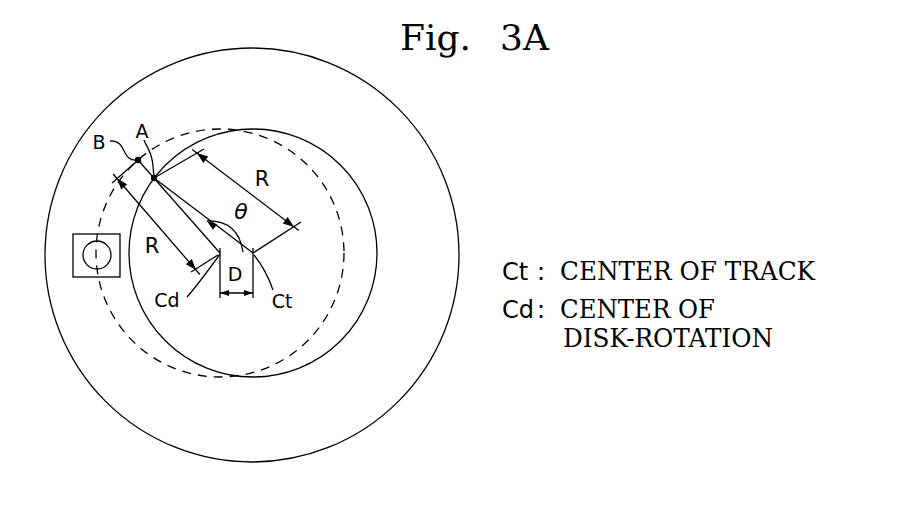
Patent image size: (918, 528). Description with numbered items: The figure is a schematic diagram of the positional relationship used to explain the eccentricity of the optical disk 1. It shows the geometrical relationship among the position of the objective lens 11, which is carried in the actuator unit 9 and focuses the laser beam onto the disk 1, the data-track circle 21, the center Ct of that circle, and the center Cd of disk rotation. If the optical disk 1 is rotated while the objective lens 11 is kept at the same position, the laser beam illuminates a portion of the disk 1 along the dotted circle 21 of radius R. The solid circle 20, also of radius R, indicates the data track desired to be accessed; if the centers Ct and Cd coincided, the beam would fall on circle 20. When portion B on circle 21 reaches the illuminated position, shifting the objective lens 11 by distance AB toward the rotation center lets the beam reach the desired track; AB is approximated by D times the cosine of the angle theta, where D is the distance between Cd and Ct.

The optical disk 1 is at (122, 96).
The actuator unit 9 is at (93, 234).
The objective lens 11 is at (83, 259).
The circle 20 is at (361, 190).
The data-track circle 21 is at (186, 131).